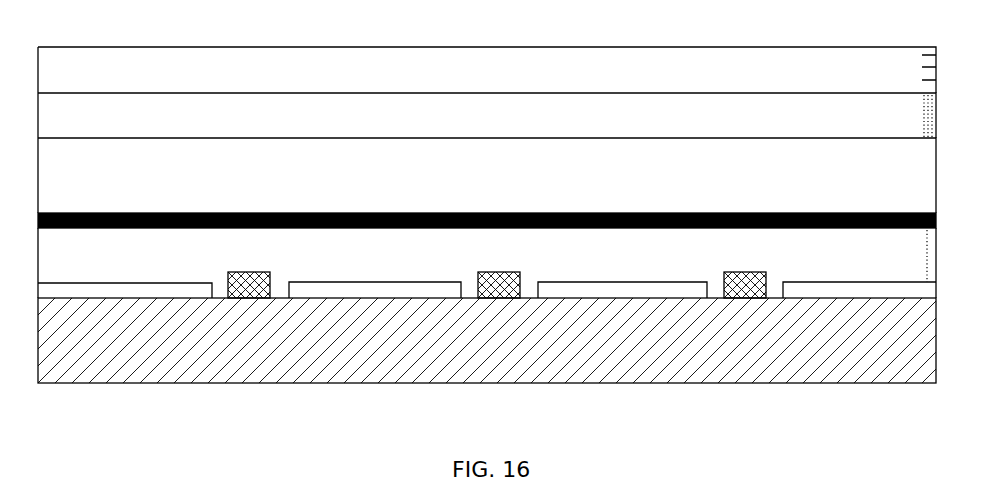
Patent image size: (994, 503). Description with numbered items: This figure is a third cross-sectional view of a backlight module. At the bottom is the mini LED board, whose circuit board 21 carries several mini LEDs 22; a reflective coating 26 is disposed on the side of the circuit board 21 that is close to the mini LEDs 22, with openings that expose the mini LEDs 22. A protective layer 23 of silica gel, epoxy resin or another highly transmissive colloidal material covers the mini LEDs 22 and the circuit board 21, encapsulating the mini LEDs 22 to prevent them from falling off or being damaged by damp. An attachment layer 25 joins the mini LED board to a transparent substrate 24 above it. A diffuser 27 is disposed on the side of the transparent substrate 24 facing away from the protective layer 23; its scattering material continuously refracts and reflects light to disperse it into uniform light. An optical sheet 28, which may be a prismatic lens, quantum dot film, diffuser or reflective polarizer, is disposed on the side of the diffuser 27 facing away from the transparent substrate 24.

The circuit board 21 is at (385, 350).
The mini LEDs 22 is at (258, 292).
The protective layer 23 is at (784, 247).
The transparent substrate 24 is at (204, 180).
The attachment layer 25 is at (448, 213).
The reflective coating 26 is at (623, 290).
The diffuser 27 is at (537, 112).
The optical sheet 28 is at (737, 75).